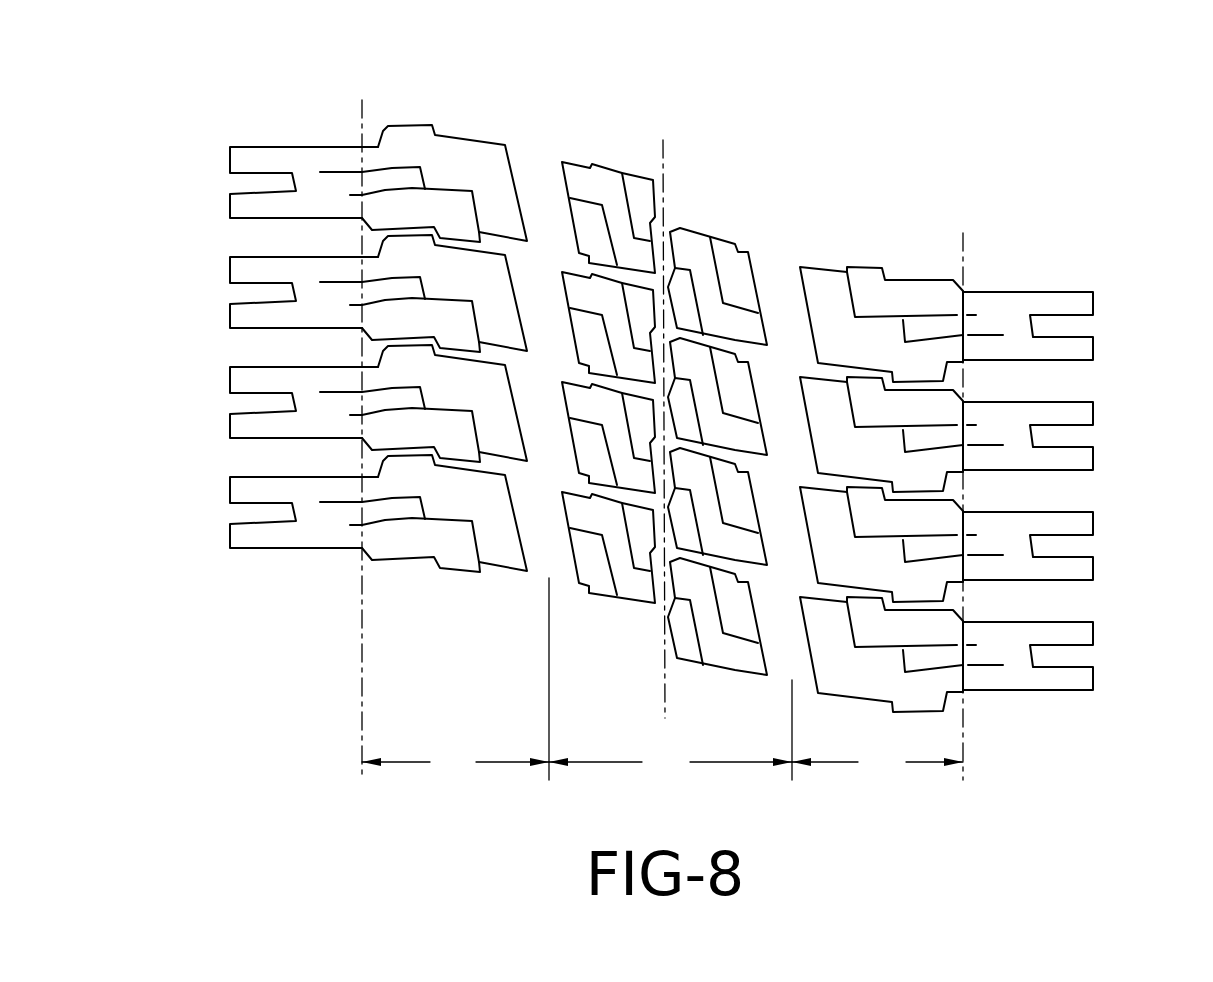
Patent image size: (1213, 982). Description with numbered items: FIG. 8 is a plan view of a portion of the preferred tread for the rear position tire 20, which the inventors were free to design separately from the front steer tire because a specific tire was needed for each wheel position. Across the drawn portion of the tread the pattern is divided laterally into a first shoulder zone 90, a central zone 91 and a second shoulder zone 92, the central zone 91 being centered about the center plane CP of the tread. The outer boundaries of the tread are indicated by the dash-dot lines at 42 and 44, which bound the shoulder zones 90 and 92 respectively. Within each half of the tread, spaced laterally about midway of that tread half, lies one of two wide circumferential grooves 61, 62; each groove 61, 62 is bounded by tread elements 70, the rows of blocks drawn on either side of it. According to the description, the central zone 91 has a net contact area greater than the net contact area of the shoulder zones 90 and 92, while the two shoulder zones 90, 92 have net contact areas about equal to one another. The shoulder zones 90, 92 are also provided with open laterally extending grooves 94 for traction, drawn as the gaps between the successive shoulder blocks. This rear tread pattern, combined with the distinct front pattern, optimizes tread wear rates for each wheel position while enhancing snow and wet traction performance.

The rear tire 20 is at (1145, 332).
The first tread edge 42 is at (362, 115).
The second tread edge 44 is at (963, 242).
The circumferential groove 61 is at (545, 170).
The circumferential groove 62 is at (785, 282).
The tread elements 70 is at (447, 158).
The shoulder zone 90 is at (455, 762).
The central zone 91 is at (670, 762).
The shoulder zone 92 is at (877, 762).
The laterally extending grooves 94 is at (383, 349).
The center plane CP is at (664, 411).